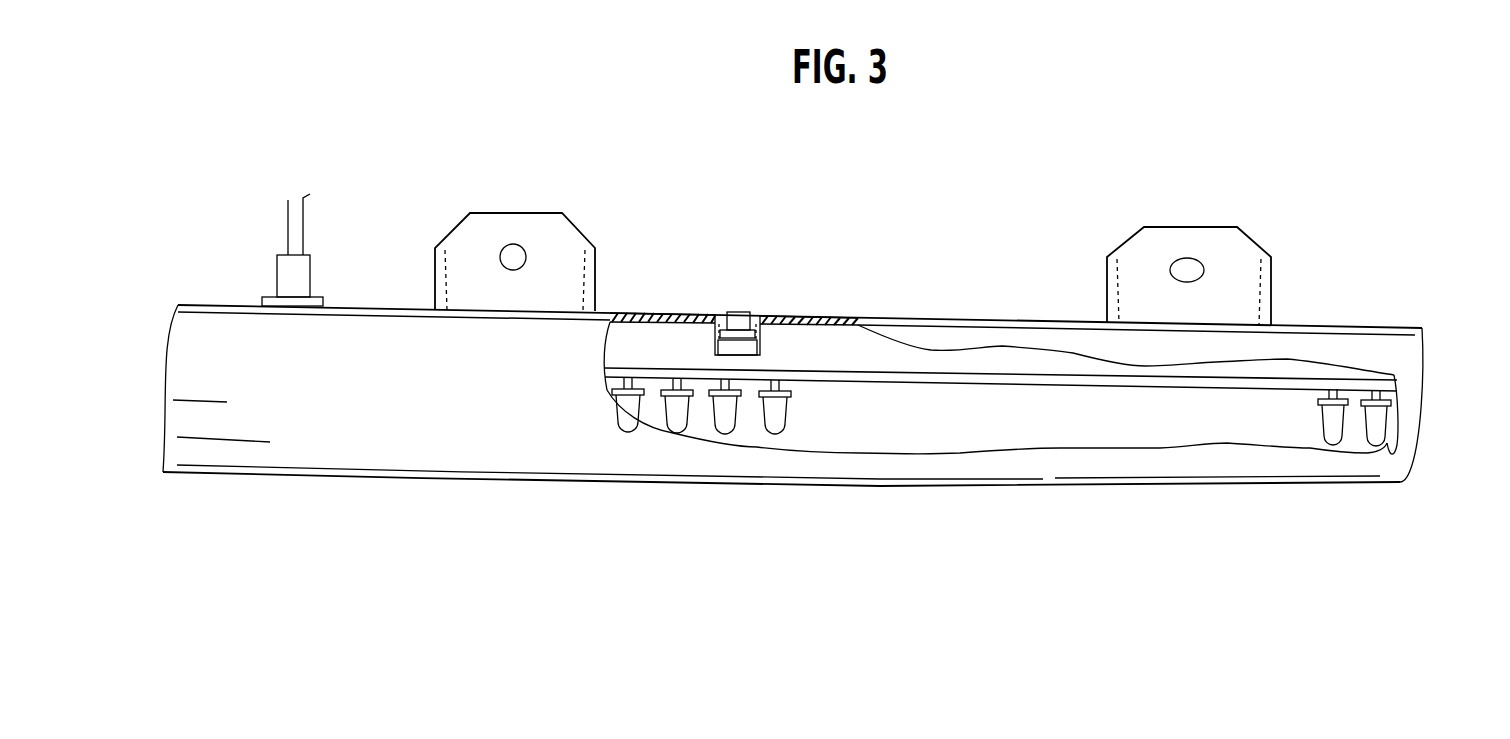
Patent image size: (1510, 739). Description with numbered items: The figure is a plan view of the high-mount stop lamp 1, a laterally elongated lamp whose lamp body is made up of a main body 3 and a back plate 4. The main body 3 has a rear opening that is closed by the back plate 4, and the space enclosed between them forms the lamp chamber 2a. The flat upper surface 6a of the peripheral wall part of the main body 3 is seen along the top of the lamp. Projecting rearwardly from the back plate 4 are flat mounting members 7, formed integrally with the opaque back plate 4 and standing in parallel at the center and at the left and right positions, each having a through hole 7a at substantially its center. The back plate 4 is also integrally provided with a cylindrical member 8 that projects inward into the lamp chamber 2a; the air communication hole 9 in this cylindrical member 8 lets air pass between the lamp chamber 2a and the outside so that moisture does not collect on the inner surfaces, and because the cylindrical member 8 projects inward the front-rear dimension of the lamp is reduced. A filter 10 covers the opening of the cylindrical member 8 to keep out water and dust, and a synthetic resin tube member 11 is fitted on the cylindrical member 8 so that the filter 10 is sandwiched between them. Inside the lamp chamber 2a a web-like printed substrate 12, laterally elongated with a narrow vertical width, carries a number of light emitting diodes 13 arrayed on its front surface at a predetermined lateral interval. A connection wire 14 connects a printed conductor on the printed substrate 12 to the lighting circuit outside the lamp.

The high-mount stop lamp 1 is at (434, 581).
The lamp chamber 2a is at (921, 435).
The main body 3 is at (900, 480).
The back plate 4 is at (650, 313).
The upper surface 6a is at (617, 452).
The mounting members 7 is at (553, 228).
The through hole 7a is at (510, 245).
The cylindrical member 8 is at (750, 320).
The air communication hole 9 is at (737, 313).
The filter 10 is at (750, 355).
The tube member 11 is at (715, 343).
The printed substrate 12 is at (1400, 372).
The light emitting diodes 13 is at (668, 422).
The connection wire 14 is at (287, 223).